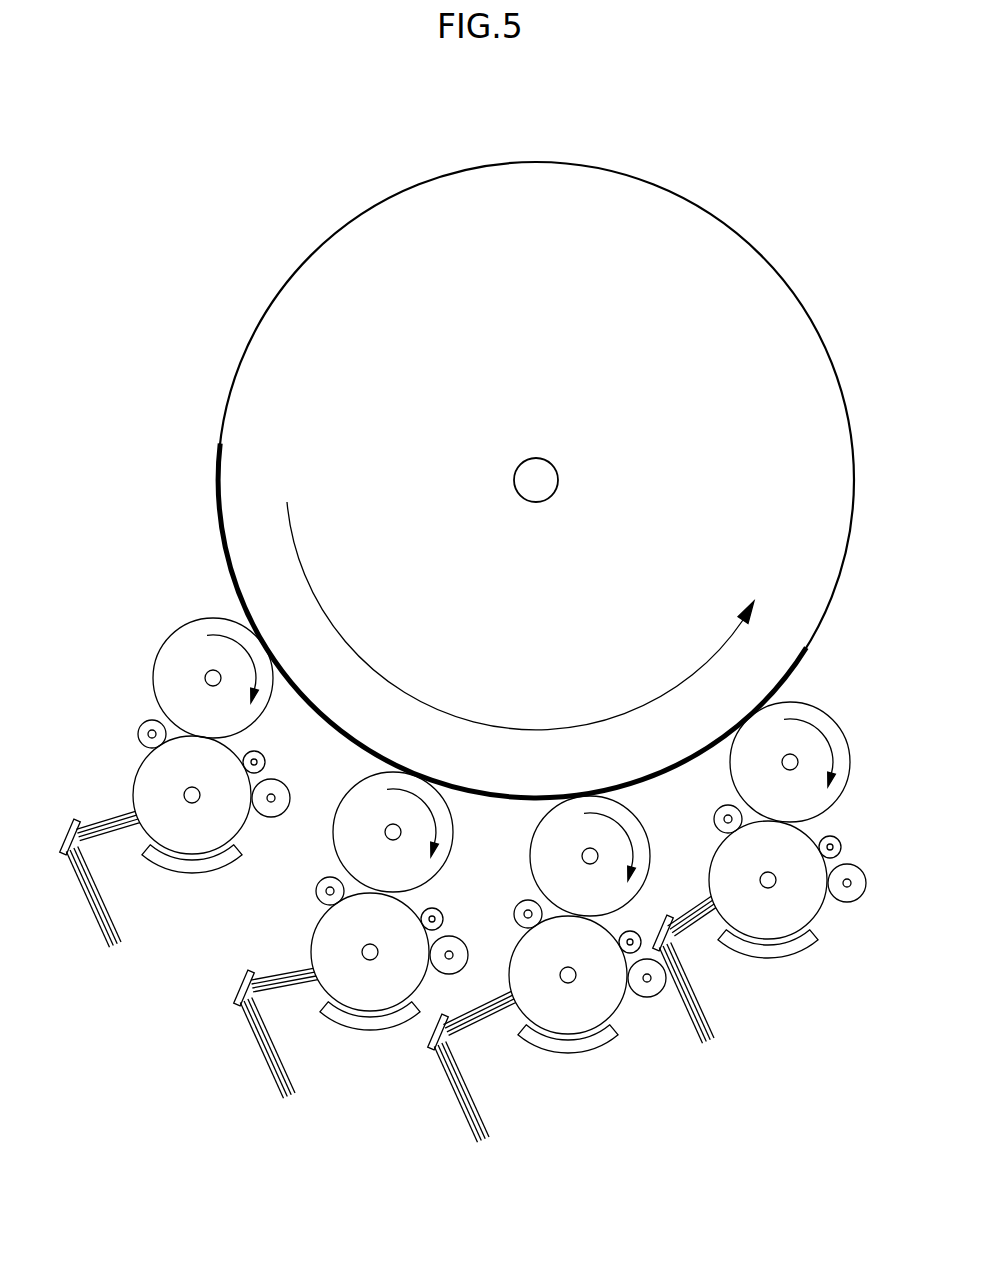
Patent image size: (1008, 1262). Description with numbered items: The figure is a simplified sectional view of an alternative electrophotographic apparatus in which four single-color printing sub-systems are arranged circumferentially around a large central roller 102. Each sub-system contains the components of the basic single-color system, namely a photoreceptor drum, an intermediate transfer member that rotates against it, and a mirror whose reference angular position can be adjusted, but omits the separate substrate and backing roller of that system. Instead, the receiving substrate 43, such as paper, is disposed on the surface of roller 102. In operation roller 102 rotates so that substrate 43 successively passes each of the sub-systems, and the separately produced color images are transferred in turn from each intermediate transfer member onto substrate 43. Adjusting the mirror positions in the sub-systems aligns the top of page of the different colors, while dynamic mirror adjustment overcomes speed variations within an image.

The roller 102 is at (738, 258).
The receiving substrate 43 is at (218, 495).